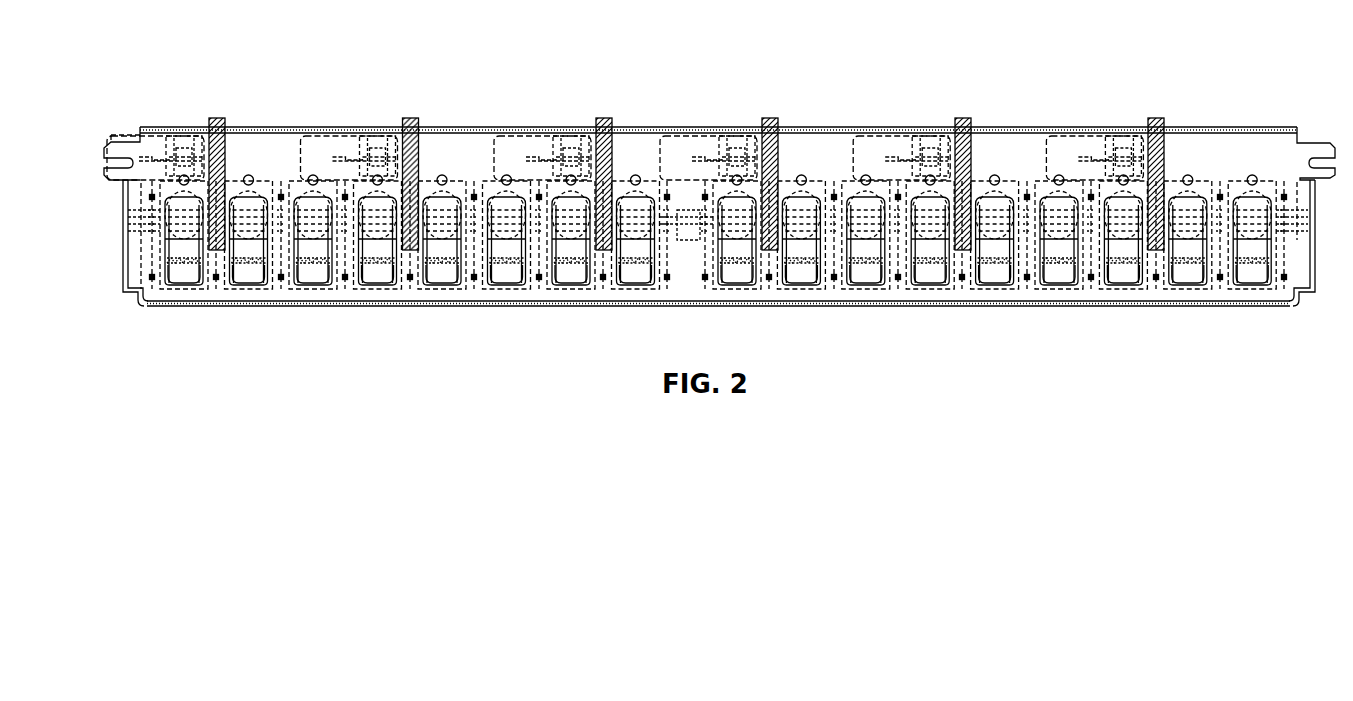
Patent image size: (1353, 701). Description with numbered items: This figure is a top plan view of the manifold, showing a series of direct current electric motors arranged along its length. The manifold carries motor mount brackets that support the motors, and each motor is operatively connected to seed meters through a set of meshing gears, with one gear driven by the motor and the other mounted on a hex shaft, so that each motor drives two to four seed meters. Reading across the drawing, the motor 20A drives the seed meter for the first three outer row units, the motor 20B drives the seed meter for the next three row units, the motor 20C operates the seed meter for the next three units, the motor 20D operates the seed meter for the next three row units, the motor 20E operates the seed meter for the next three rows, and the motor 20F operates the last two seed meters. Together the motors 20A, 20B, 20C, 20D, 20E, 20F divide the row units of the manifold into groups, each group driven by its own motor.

The motor 20A is at (1094, 127).
The motor 20B is at (901, 127).
The motor 20C is at (708, 127).
The motor 20D is at (542, 127).
The motor 20E is at (349, 127).
The motor 20F is at (155, 127).